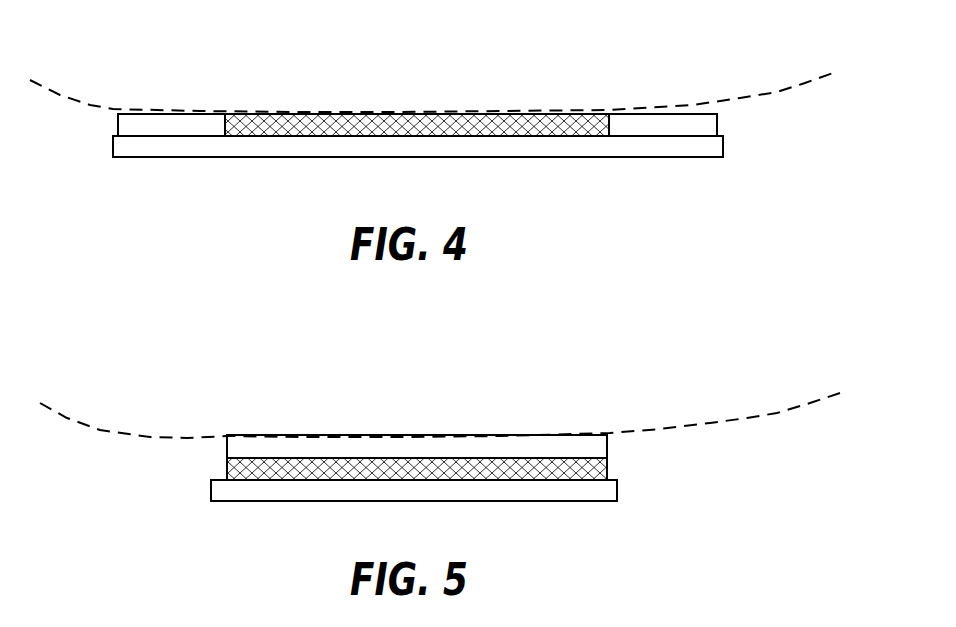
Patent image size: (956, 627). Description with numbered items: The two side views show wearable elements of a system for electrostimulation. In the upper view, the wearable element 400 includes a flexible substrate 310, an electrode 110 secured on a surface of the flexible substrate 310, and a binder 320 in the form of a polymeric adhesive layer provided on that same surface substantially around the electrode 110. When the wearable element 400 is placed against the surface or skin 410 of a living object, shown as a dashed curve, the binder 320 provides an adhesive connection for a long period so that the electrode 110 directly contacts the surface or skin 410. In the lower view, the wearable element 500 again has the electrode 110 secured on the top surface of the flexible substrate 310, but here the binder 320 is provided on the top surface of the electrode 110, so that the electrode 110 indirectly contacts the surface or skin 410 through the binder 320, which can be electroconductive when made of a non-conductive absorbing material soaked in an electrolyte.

In FIG. 4, the electrode 110 is at (315, 125).
In FIG. 5, the electrode 110 is at (315, 467).
In FIG. 4, the flexible substrate 310 is at (632, 145).
In FIG. 5, the flexible substrate 310 is at (590, 492).
In FIG. 4, the binder 320 is at (168, 127).
In FIG. 5, the binder 320 is at (573, 450).
In FIG. 4, the wearable element 400 is at (124, 183).
In FIG. 4, the surface or skin 410 is at (778, 93).
In FIG. 5, the surface or skin 410 is at (777, 413).
In FIG. 5, the wearable element 500 is at (175, 498).